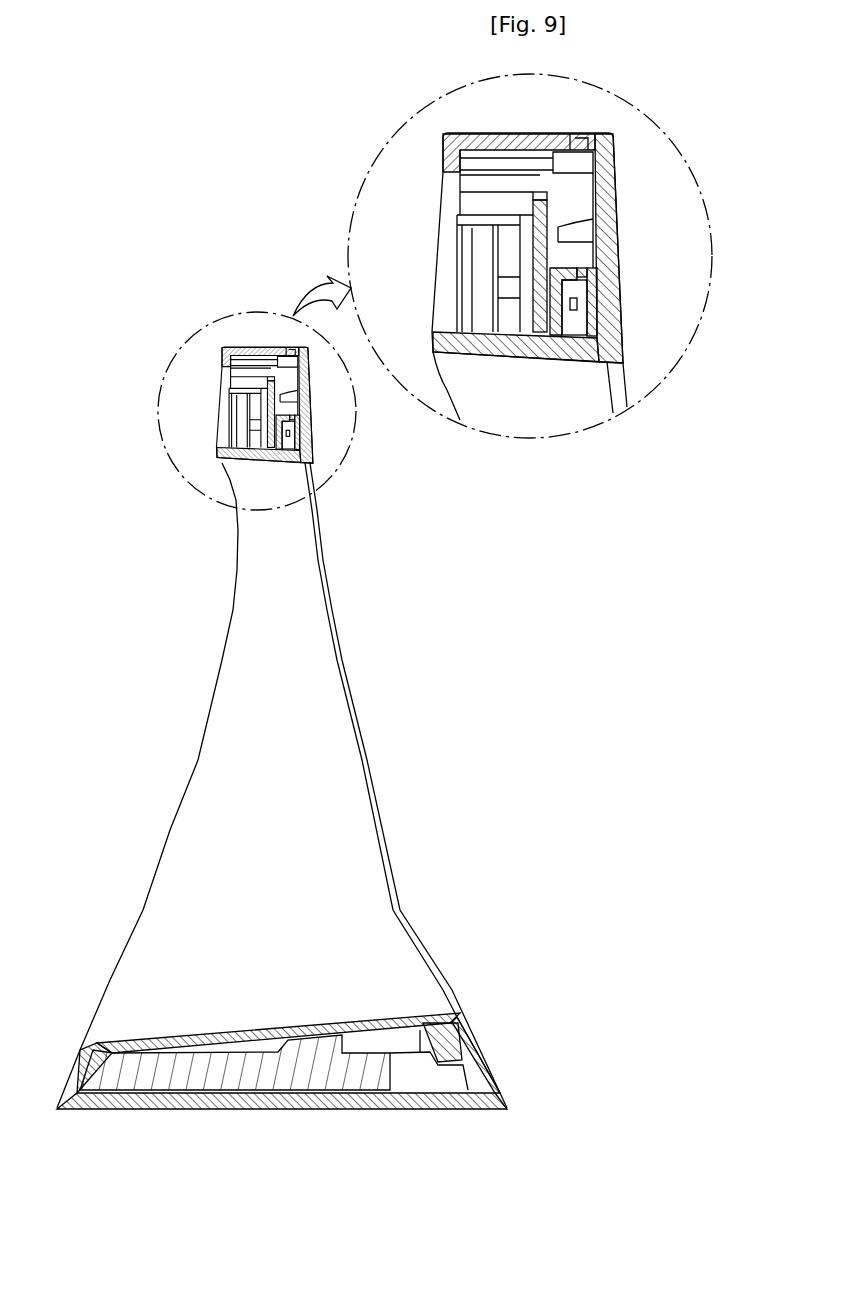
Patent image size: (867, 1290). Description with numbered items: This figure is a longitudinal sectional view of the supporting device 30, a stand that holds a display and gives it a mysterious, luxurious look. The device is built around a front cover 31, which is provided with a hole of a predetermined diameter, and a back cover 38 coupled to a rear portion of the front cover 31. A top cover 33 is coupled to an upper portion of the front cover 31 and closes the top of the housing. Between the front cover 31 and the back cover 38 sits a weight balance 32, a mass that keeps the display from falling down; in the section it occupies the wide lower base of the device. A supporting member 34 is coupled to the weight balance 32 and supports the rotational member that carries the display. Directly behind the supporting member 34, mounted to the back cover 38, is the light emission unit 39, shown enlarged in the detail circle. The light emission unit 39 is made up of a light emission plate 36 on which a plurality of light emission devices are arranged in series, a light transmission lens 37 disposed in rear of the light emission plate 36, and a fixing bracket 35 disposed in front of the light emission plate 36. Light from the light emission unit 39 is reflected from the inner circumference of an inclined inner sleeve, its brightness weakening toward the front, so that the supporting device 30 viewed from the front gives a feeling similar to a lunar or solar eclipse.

The supporting device 30 is at (90, 520).
The front cover 31 is at (147, 912).
The weight balance 32 is at (125, 1071).
The top cover 33 is at (480, 131).
The supporting member 34 is at (538, 212).
The fixing bracket 35 is at (578, 278).
The light emission plate 36 is at (593, 295).
The light transmission lens 37 is at (620, 324).
The back cover 38 is at (607, 230).
The light emission unit 39 is at (749, 253).